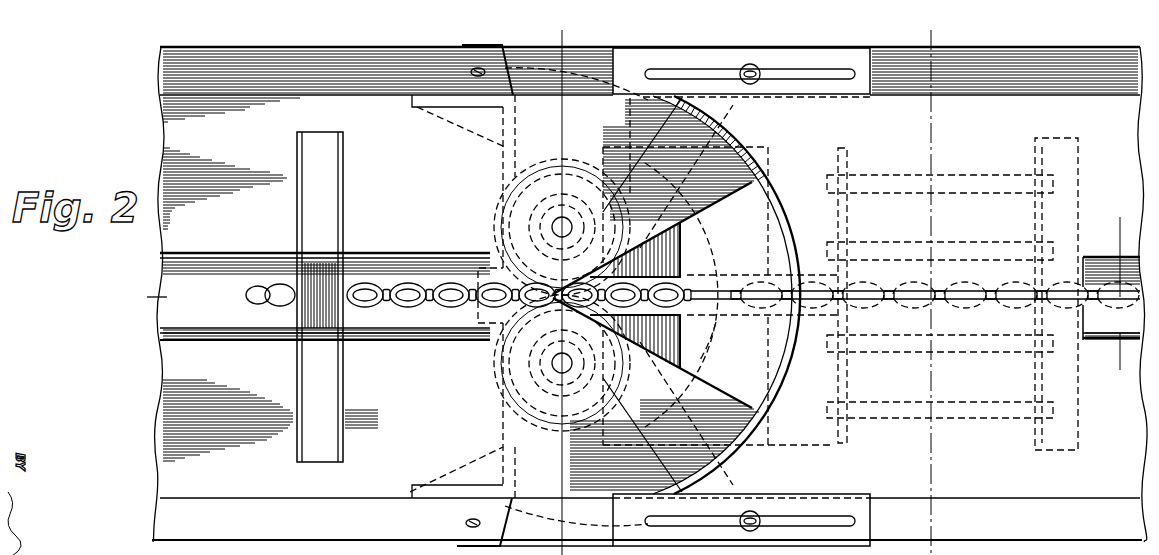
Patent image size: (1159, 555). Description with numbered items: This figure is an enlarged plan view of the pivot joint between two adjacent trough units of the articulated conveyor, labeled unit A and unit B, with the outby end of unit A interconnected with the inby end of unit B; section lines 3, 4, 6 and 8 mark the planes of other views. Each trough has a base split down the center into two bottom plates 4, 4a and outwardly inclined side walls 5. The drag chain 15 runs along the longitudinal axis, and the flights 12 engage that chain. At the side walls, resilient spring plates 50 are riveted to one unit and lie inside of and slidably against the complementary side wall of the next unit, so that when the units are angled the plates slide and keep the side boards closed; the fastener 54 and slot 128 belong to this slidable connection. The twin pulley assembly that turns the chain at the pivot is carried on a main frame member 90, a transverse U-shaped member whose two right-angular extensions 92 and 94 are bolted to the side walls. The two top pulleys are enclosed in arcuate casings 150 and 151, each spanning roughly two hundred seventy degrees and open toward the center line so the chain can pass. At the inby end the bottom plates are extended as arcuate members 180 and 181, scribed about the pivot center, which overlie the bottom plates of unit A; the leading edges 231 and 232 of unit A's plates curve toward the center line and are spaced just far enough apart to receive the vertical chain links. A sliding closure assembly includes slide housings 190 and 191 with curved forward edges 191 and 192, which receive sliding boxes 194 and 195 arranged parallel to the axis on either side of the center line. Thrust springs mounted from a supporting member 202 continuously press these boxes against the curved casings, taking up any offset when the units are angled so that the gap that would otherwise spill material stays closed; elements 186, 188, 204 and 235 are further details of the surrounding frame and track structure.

The section line 3- 3 is at (188, 276).
The trough bottom plate 4 is at (583, 62).
The trough bottom plate 4a is at (998, 146).
The side wall 5 is at (1058, 81).
The section line 6- 6 is at (910, 70).
The section line 8- 8 is at (1137, 228).
The flight 12 is at (328, 188).
The drag chain 15 is at (437, 294).
The spring plate 50 is at (610, 62).
The bolt 54 is at (471, 72).
The main frame member 90 is at (503, 156).
The right-angular extension 92 is at (438, 115).
The right-angular extension 94 is at (450, 476).
The slot 128 is at (765, 100).
The pulley casing 150 is at (570, 163).
The pulley casing 151 is at (555, 423).
The arcuate extension 180 is at (655, 197).
The arcuate extension 181 is at (693, 392).
The cross member 186 is at (849, 176).
The bracket 188 is at (817, 444).
The slide housing 190 is at (768, 145).
The slide housing 191 is at (703, 262).
The curved forward edge 192 is at (687, 365).
The sliding member 194 is at (840, 153).
The sliding member 195 is at (817, 370).
The supporting member 202 is at (1067, 170).
The end member 204 is at (1068, 418).
The leading edge 231 is at (635, 249).
The leading edge 232 is at (635, 341).
The track 235 is at (235, 318).
The conveyor unit A is at (1088, 98).
The conveyor unit B is at (180, 419).